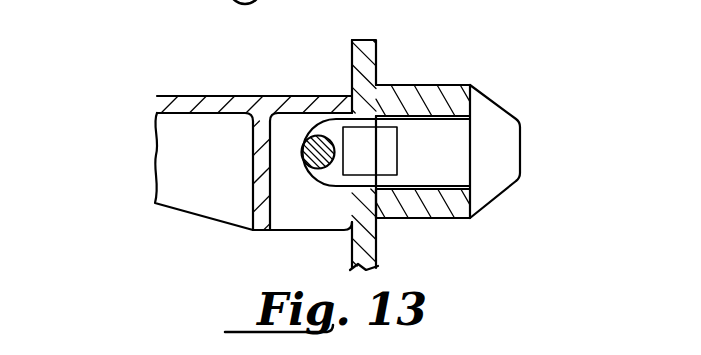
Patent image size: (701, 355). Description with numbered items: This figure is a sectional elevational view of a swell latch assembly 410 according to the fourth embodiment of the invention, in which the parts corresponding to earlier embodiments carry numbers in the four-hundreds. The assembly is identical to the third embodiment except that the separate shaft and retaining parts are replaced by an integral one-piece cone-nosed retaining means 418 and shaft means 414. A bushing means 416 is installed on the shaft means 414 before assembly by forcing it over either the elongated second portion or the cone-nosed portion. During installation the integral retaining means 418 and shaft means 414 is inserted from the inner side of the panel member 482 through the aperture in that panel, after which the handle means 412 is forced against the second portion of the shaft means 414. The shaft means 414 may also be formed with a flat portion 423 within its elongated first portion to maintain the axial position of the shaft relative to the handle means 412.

The swell latch assembly 410 is at (502, 83).
The handle means 412 is at (191, 104).
The shaft means 414 is at (453, 168).
The bushing means 416 is at (410, 93).
The retaining means 418 is at (515, 138).
The flat portion 423 is at (350, 143).
The panel member 482 is at (357, 250).